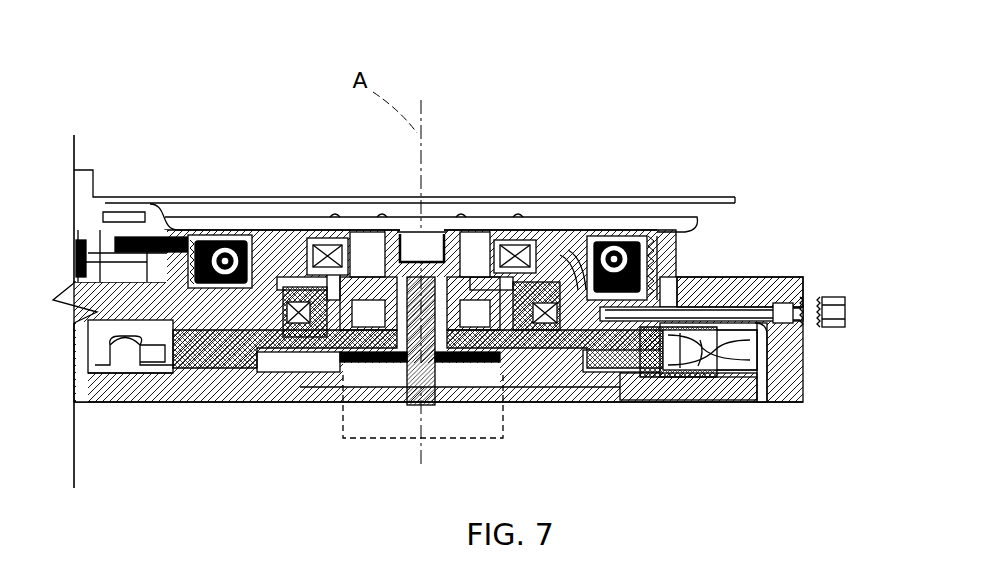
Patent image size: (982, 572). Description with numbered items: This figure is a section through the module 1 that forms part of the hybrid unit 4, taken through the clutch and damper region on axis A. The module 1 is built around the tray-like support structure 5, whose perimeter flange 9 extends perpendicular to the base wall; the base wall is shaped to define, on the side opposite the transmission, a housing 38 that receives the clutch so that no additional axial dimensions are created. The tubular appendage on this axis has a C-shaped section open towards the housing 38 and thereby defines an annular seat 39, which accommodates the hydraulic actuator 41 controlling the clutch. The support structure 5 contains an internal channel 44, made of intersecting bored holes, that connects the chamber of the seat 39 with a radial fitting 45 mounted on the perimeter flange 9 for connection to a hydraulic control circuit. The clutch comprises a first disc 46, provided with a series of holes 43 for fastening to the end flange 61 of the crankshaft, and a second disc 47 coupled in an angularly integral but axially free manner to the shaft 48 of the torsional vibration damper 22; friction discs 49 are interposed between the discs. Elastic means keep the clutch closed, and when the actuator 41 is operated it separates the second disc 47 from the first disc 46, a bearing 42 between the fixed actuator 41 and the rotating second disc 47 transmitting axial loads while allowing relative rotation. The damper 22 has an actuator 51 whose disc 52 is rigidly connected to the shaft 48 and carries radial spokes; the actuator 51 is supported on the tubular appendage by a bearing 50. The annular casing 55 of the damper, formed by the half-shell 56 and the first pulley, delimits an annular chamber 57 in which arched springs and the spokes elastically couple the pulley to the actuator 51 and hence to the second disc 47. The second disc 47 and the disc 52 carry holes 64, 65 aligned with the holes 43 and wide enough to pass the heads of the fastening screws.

The module 1 is at (766, 276).
The hybrid unit 4 is at (112, 103).
The support structure 5 is at (806, 404).
The perimeter flange 9 is at (797, 363).
The torsional vibration damper 22 is at (652, 232).
The housing 38 is at (755, 363).
The annular seat 39 is at (515, 335).
The hydraulic actuator 41 is at (543, 272).
The bearing 42 is at (300, 292).
The holes 43 is at (362, 375).
The internal channel 44 is at (704, 307).
The radial fitting 45 is at (840, 305).
The first disc 46 is at (652, 378).
The second disc 47 is at (240, 352).
The shaft 48 is at (432, 338).
The friction discs 49 is at (165, 352).
The bearing 50 is at (337, 240).
The actuator 51 is at (458, 282).
The disc 52 is at (520, 238).
The annular casing 55 is at (717, 333).
The half-shell 56 is at (232, 283).
The annular chamber 57 is at (236, 238).
The end flange 61 is at (392, 443).
The holes 64 is at (393, 363).
The holes 65 is at (484, 250).